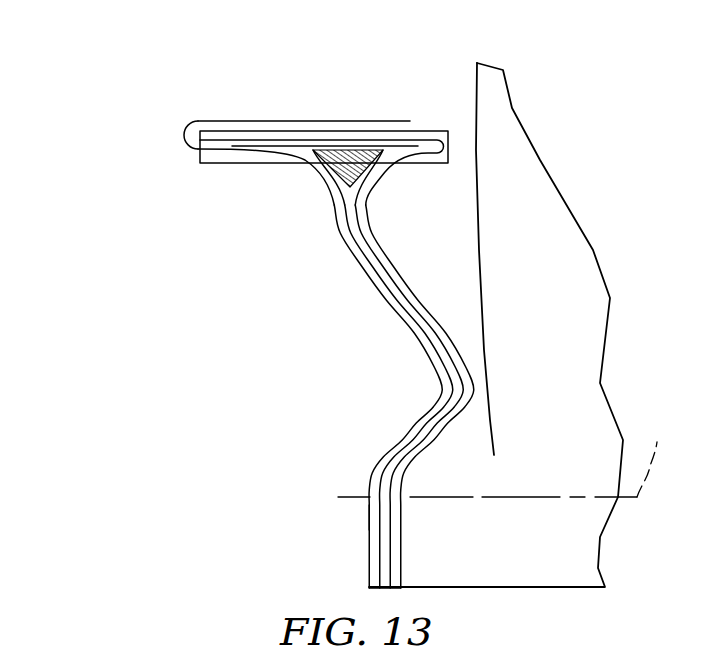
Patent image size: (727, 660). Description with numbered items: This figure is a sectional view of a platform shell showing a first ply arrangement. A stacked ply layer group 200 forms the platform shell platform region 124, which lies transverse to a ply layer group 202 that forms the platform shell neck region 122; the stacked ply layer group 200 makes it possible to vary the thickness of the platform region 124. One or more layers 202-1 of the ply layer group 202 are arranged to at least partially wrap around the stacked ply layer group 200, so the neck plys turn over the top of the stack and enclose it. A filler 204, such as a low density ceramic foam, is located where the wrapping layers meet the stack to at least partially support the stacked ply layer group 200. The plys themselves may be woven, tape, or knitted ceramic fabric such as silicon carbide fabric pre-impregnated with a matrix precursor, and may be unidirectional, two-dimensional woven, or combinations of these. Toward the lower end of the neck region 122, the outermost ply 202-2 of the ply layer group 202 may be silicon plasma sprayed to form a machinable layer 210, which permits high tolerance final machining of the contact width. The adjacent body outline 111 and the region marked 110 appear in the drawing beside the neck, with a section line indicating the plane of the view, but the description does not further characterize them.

The housing 110 is at (535, 482).
The housing wall 111 is at (439, 106).
The platform shell neck region 122 is at (402, 370).
The platform shell platform region 124 is at (271, 109).
The stacked ply layer group 200 is at (383, 131).
The ply layer group 202 is at (398, 295).
The layer of the ply layer group 202-1 is at (182, 137).
The outermost ply 202-2 is at (380, 567).
The filler 204 is at (338, 170).
The machinable layer 210 is at (368, 517).